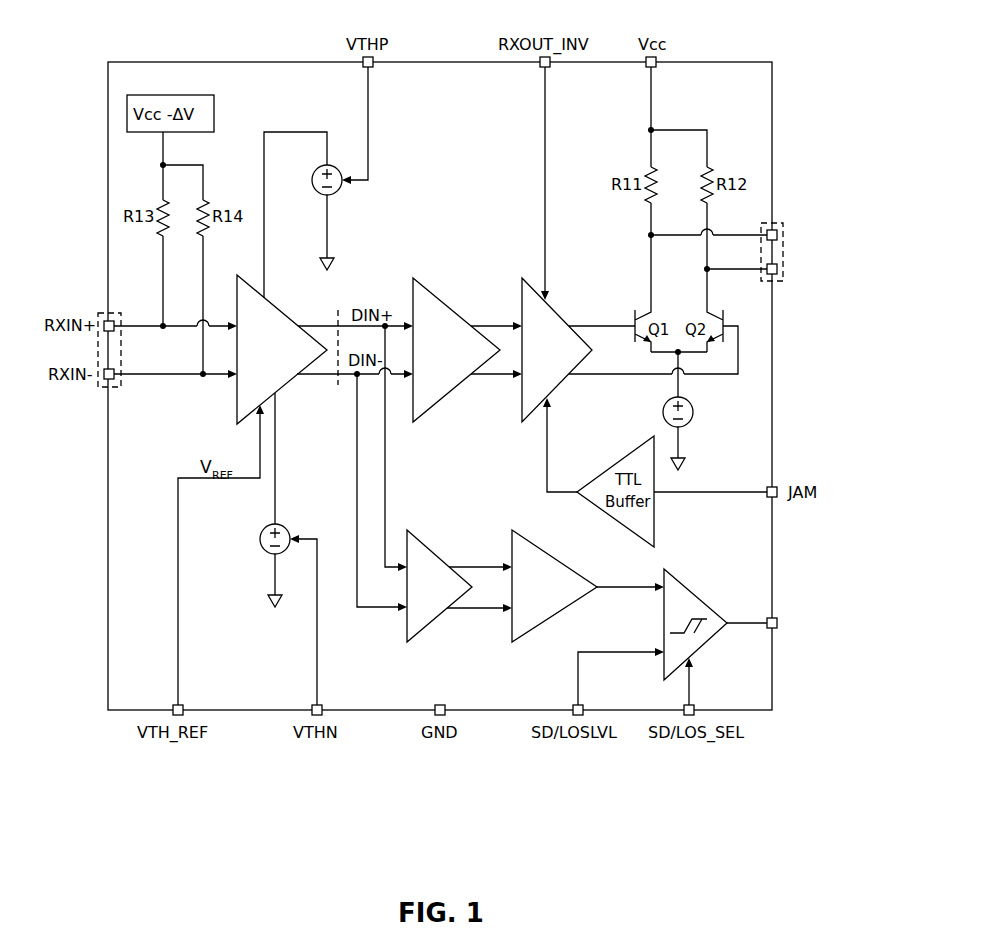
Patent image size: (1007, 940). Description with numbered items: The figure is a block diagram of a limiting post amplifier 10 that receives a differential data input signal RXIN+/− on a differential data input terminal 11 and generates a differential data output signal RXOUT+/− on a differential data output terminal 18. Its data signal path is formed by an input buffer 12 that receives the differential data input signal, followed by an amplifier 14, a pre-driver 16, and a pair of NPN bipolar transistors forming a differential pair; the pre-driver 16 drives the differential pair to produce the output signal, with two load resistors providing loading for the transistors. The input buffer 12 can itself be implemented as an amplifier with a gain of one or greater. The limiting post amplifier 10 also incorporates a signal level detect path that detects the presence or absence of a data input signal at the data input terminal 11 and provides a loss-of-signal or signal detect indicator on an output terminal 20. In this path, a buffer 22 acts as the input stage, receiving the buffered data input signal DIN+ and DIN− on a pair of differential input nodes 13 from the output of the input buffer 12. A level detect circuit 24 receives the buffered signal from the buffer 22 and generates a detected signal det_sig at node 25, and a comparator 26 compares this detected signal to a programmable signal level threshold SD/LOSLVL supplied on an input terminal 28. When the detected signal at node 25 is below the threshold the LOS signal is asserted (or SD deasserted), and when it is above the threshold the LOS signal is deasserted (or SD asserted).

The limiting post amplifier 10 is at (742, 62).
The differential data input terminal 11 is at (103, 389).
The input buffer 12 is at (282, 308).
The differential input nodes 13 is at (338, 310).
The amplifier 14 is at (456, 312).
The pre-driver 16 is at (566, 312).
The differential data output terminal 18 is at (773, 222).
The output terminal 20 is at (772, 616).
The buffer 22 is at (440, 556).
The level detect circuit 24 is at (556, 557).
The node 25 is at (616, 591).
The comparator 26 is at (698, 597).
The input terminal 28 is at (577, 702).